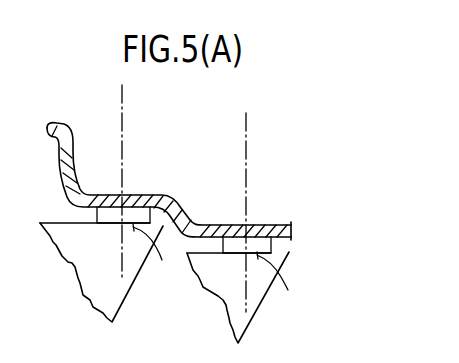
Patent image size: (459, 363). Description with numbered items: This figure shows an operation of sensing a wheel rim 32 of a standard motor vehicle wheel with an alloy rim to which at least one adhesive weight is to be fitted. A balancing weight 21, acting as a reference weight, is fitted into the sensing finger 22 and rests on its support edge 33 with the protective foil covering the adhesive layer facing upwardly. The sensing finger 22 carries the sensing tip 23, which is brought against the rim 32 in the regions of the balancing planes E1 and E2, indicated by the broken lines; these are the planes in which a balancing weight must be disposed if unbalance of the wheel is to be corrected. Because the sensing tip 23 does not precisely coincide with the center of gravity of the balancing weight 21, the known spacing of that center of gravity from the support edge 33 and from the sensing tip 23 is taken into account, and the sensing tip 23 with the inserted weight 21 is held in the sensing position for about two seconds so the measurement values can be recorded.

The balancing weight 21 is at (112, 213).
The sensing finger 22 is at (84, 266).
The sensing tip 23 is at (167, 194).
The wheel rim 32 is at (273, 225).
The support edge 33 is at (157, 251).
The balancing plane E1 is at (122, 105).
The balancing plane E2 is at (246, 137).